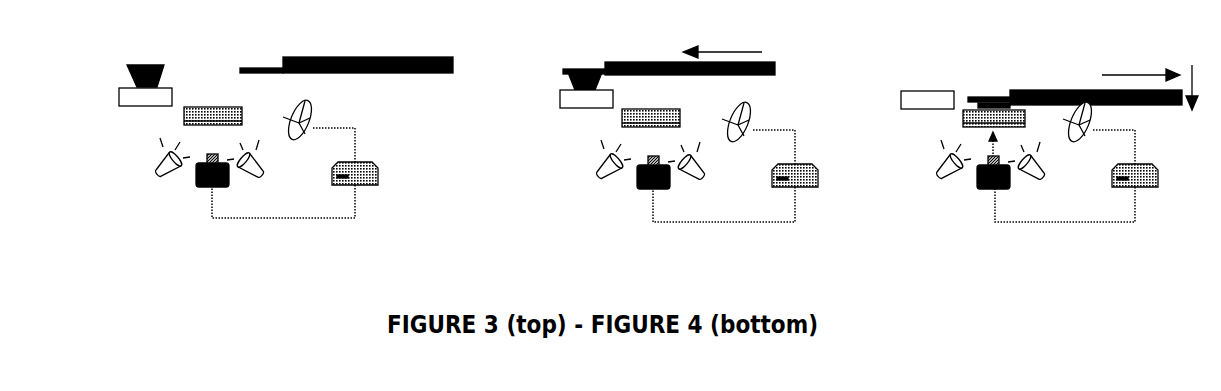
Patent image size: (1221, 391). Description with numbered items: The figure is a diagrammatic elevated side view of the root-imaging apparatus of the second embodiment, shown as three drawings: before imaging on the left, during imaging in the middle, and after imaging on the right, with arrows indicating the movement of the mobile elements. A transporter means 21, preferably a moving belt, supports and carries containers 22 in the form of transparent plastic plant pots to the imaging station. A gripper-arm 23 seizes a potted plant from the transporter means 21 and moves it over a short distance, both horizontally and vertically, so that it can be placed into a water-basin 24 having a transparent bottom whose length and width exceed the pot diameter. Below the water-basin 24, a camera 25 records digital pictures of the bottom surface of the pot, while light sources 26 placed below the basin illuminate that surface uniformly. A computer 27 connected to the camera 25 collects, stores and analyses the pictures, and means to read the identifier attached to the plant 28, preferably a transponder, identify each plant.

The transporter means 21 is at (119, 96).
The container 22 is at (162, 63).
The gripper-arm 23 is at (348, 58).
The water-basin 24 is at (242, 108).
The camera 25 is at (198, 183).
The light sources 26 is at (263, 175).
The computer 27 is at (373, 162).
The means to read the identifier attached to the plant 28 is at (310, 115).